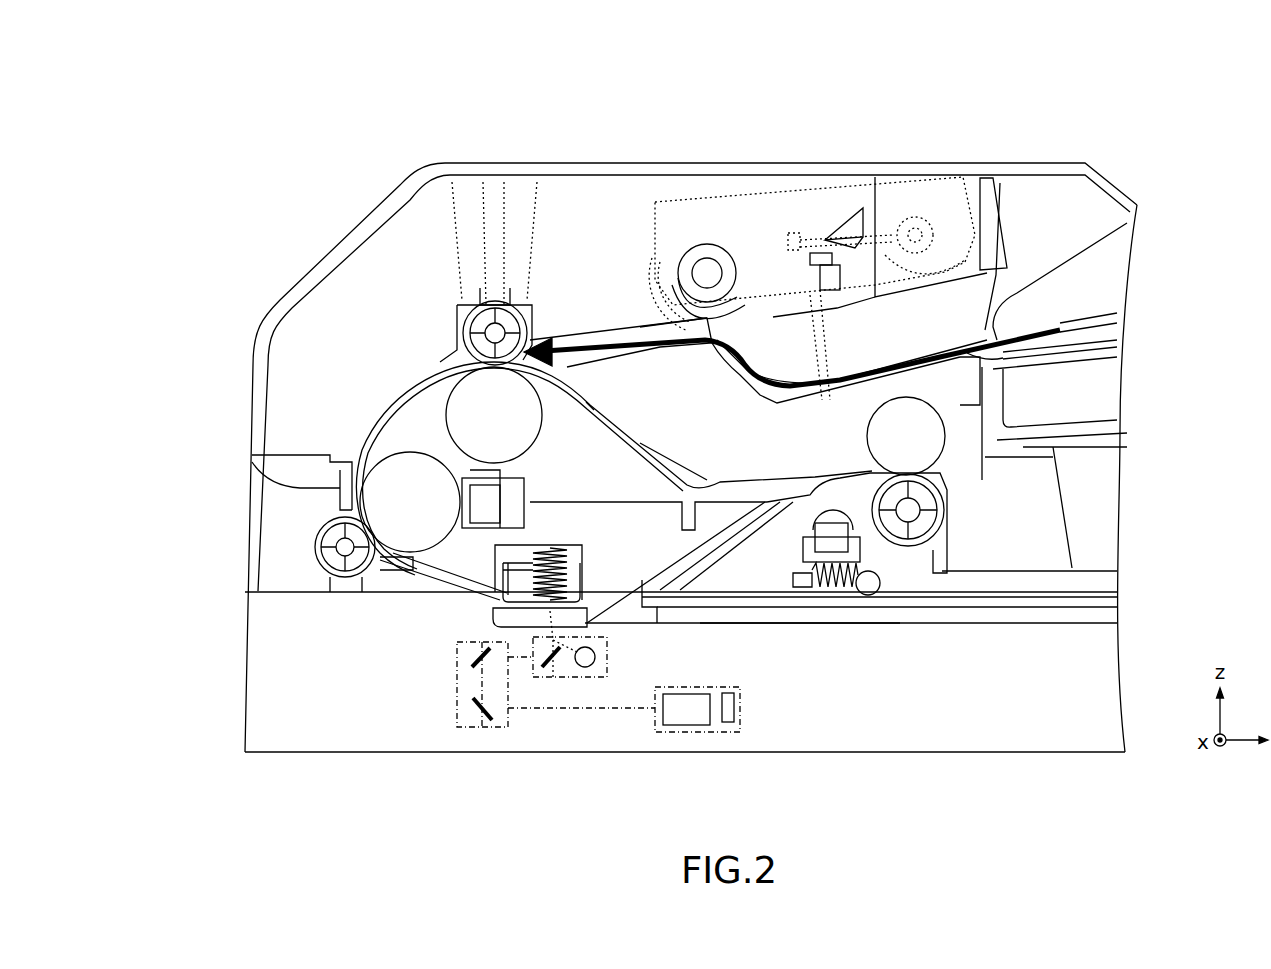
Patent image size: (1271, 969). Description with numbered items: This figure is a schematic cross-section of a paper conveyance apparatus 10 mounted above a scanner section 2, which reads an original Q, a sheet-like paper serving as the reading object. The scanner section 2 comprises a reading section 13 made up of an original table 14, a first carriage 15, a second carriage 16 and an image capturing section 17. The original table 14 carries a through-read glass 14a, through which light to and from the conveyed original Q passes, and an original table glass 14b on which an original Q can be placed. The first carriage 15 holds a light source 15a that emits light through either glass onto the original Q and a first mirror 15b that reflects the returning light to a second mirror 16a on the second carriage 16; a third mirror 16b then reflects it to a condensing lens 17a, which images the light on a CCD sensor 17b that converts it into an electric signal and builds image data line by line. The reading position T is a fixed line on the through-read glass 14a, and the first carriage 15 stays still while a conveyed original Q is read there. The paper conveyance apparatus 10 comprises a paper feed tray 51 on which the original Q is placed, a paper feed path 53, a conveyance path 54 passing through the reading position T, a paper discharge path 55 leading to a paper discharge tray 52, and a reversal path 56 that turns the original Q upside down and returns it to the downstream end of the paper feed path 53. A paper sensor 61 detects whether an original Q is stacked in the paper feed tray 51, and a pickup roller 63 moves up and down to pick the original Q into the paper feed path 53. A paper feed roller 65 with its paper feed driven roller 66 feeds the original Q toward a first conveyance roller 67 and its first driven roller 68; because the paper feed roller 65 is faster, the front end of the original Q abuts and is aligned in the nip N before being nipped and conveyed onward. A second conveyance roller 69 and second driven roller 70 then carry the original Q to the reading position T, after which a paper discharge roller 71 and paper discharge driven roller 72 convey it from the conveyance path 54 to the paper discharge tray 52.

The paper conveyance apparatus 10 is at (1108, 79).
The scanner section 2 is at (263, 699).
The reading section 13 is at (583, 717).
The original table 14 is at (843, 622).
The through-read glass 14a is at (512, 627).
The original table glass 14b is at (810, 624).
The first carriage 15 is at (611, 640).
The light source 15a is at (588, 661).
The first mirror 15b is at (550, 672).
The second carriage 16 is at (455, 717).
The second mirror 16a is at (473, 657).
The third mirror 16b is at (473, 702).
The image capturing section 17 is at (745, 716).
The condensing lens 17a is at (690, 727).
The CCD sensor 17b is at (738, 699).
The paper feed tray 51 is at (1053, 283).
The paper discharge tray 52 is at (1075, 485).
The paper feed path 53 is at (640, 330).
The conveyance path 54 is at (397, 399).
The paper discharge path 55 is at (951, 463).
The reversal path 56 is at (602, 394).
The paper sensor 61 is at (945, 313).
The pickup roller 63 is at (940, 250).
The paper feed roller 65 is at (757, 355).
The paper feed driven roller 66 is at (700, 345).
The first conveyance roller 67 is at (458, 417).
The first driven roller 68 is at (483, 333).
The second conveyance roller 69 is at (383, 477).
The second driven roller 70 is at (340, 545).
The paper discharge roller 71 is at (927, 452).
The paper discharge driven roller 72 is at (910, 547).
The nip N is at (557, 344).
The original Q is at (771, 345).
The reading position T is at (550, 611).